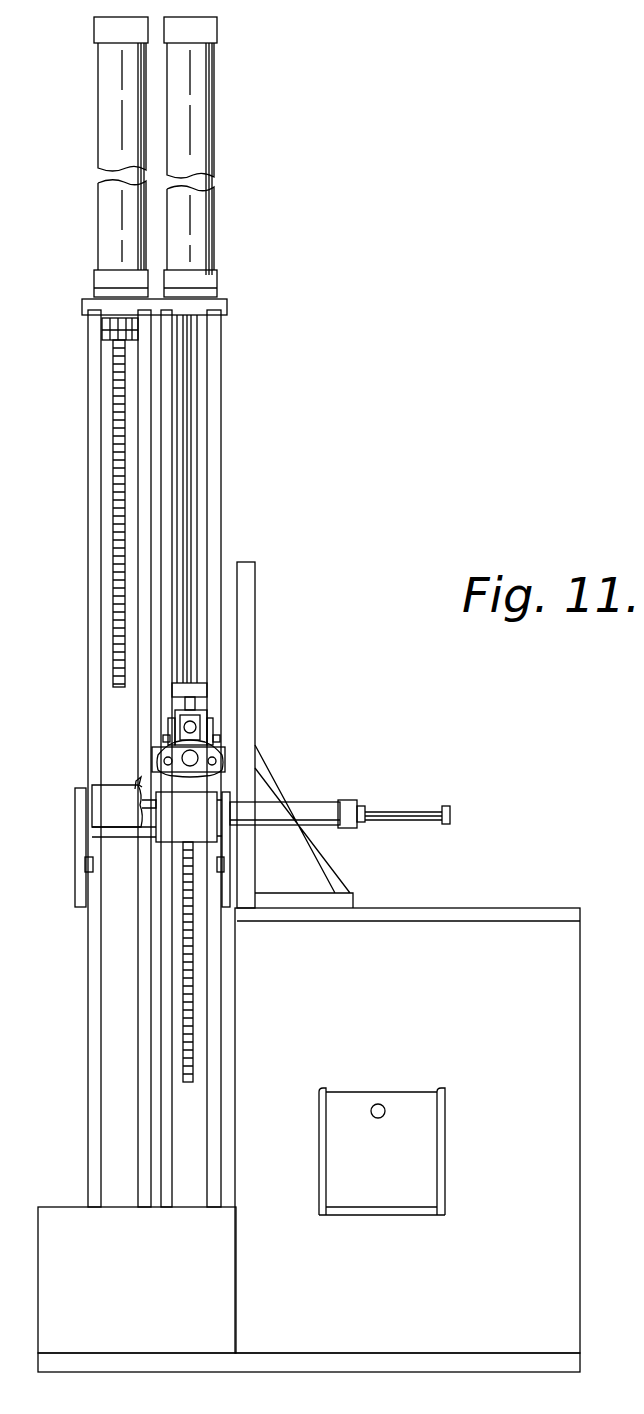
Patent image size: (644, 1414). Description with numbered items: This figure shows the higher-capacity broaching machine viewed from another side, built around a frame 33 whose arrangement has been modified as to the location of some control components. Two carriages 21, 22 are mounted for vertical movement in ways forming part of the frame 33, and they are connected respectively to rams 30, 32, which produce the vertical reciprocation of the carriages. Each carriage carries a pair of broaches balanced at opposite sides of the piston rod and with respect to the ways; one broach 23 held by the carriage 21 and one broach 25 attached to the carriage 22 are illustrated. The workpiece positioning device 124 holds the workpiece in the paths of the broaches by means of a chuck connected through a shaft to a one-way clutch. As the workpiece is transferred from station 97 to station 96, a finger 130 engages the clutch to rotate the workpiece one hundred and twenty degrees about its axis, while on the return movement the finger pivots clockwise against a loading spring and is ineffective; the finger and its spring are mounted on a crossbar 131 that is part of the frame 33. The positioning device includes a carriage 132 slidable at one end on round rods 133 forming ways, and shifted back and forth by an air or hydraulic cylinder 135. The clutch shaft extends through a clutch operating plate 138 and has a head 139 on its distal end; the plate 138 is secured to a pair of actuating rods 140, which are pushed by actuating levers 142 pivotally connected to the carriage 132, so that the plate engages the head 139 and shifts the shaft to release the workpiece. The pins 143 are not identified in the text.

The ram 30 is at (100, 156).
The ram 32 is at (213, 213).
The carriage 21 is at (110, 330).
The broach 23 is at (118, 458).
The carriage 22 is at (200, 690).
The clutch operating plate 138 is at (207, 736).
The actuating lever 142 is at (167, 736).
The fasteners 143 is at (163, 740).
The head 139 is at (225, 764).
The actuating rods 140 is at (160, 758).
The workpiece positioning device 124 is at (130, 737).
The station 96 is at (113, 787).
The finger 130 is at (140, 792).
The crossbar 131 is at (136, 804).
The round rods 133 is at (122, 836).
The carriage 132 is at (205, 834).
The station 97 is at (230, 796).
The air or hydraulic cylinder 135 is at (328, 800).
The broach 25 is at (193, 1020).
The frame 33 is at (87, 1022).